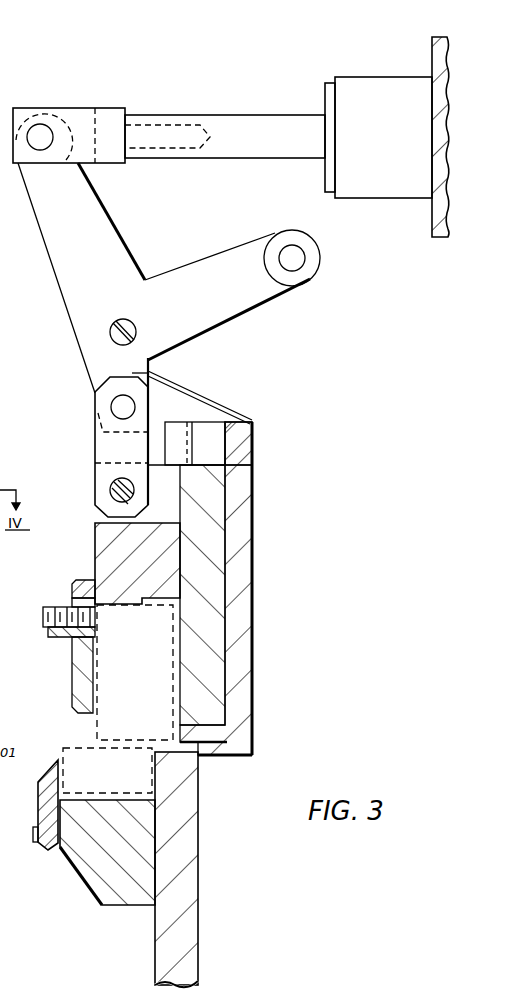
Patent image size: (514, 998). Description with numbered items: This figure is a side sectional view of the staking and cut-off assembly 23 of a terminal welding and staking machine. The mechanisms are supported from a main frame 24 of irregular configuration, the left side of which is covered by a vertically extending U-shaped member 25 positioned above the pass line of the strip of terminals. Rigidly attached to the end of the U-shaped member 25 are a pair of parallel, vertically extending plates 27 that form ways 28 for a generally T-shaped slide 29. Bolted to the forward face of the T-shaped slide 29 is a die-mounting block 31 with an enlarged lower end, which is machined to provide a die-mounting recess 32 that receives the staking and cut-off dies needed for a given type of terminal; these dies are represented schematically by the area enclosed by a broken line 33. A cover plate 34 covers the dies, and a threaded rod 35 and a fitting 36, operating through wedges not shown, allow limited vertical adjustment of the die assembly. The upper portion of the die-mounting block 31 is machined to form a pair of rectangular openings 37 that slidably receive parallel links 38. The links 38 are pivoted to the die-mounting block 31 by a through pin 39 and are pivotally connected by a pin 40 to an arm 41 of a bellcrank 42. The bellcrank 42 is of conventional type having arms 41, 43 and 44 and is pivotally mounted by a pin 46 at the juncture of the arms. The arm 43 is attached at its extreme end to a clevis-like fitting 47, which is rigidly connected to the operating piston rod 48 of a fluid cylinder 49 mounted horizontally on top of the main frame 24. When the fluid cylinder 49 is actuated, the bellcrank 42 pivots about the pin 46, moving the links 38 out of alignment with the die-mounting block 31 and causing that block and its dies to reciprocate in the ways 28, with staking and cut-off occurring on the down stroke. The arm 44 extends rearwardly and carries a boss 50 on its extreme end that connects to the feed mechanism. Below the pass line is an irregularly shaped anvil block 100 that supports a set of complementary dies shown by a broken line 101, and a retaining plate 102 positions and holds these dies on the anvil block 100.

The staking and cut-off assembly 23 is at (287, 575).
The main frame 24 is at (182, 902).
The U-shaped member 25 is at (237, 683).
The plates 27 is at (173, 433).
The ways 28 is at (212, 448).
The T-shaped slide 29 is at (210, 572).
The die-mounting block 31 is at (115, 558).
The die-mounting recess 32 is at (125, 640).
The dies 33 is at (95, 726).
The cover plate 34 is at (88, 697).
The threaded rod 35 is at (50, 618).
The fitting 36 is at (62, 600).
The rectangular openings 37 is at (162, 507).
The links 38 is at (115, 443).
The through pin 39 is at (110, 490).
The pin 40 is at (125, 410).
The arm 41 is at (150, 372).
The bellcrank 42 is at (120, 260).
The arm 43 is at (48, 213).
The arm 44 is at (247, 255).
The pin 46 is at (112, 340).
The clevis-like fitting 47 is at (87, 120).
The piston rod 48 is at (250, 130).
The fluid cylinder 49 is at (437, 73).
The boss 50 is at (302, 273).
The anvil block 100 is at (102, 900).
The dies 101 is at (63, 753).
The retaining plate 102 is at (45, 812).